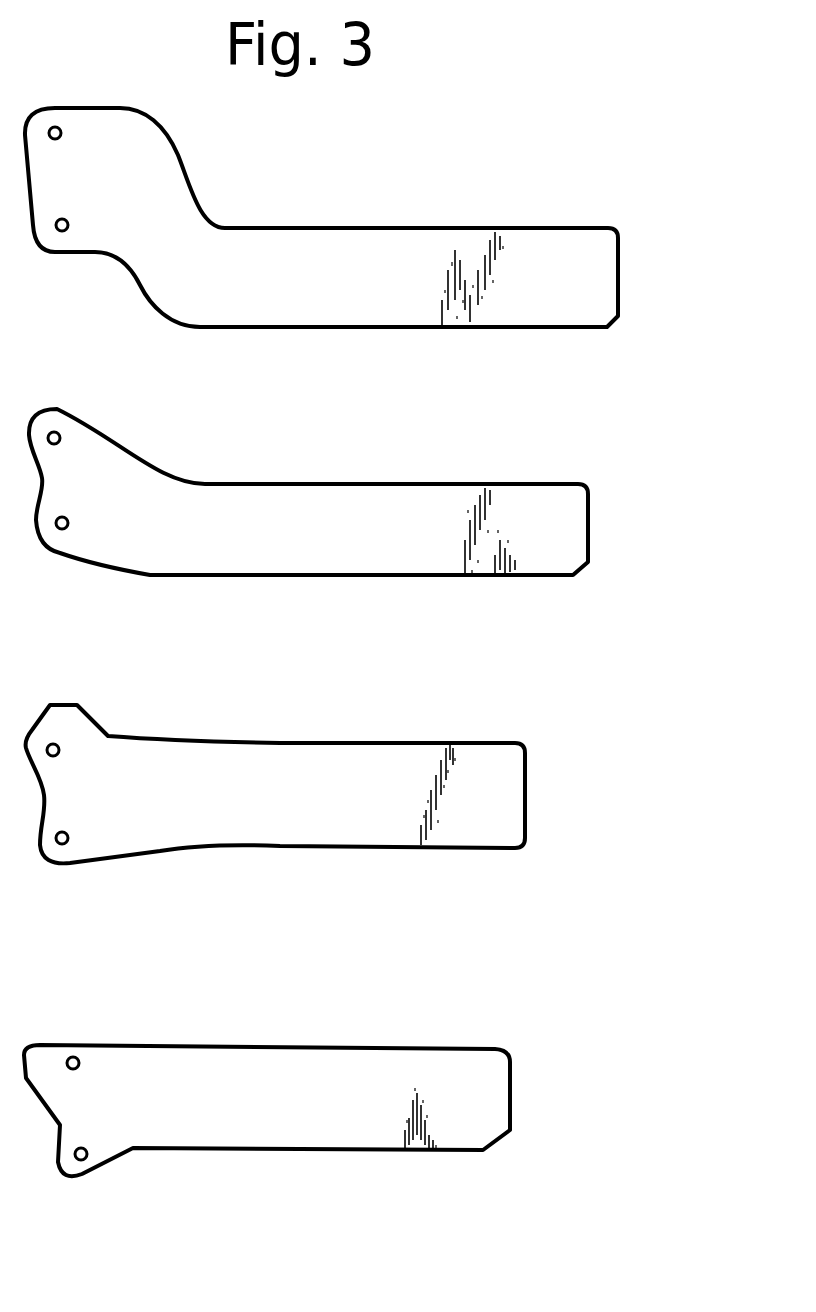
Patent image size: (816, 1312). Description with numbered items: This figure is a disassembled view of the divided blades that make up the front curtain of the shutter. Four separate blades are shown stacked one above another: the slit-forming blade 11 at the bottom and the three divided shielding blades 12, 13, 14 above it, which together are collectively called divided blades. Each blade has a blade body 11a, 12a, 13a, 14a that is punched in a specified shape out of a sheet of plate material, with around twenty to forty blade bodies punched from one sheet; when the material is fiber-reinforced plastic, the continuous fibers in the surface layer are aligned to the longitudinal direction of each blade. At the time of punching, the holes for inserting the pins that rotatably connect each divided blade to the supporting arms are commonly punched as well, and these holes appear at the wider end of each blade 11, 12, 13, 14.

The slit-forming blade 11 is at (520, 1098).
The blade body 11a is at (388, 1128).
The divided shielding blade 12 is at (528, 775).
The blade body 12a is at (382, 827).
The divided shielding blade 13 is at (593, 506).
The blade body 13a is at (423, 555).
The divided shielding blade 14 is at (622, 292).
The blade body 14a is at (500, 308).